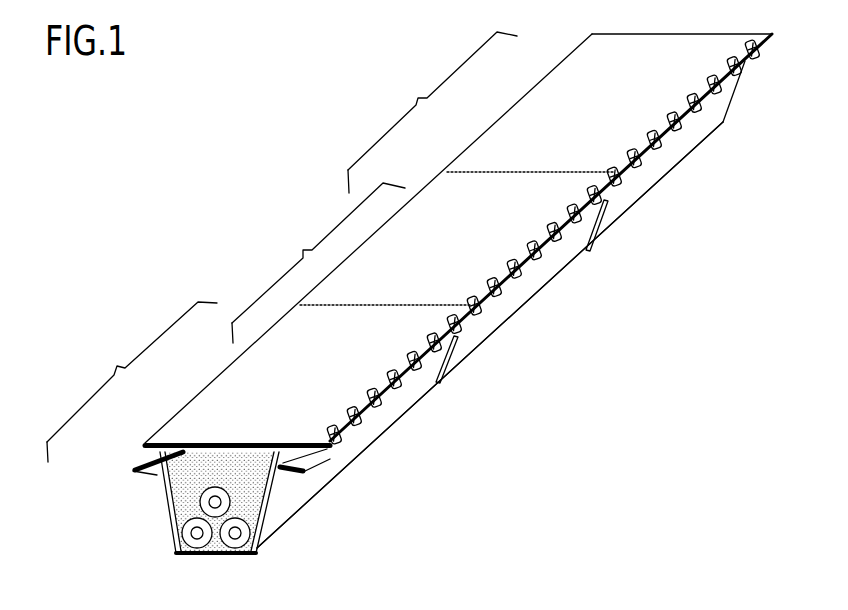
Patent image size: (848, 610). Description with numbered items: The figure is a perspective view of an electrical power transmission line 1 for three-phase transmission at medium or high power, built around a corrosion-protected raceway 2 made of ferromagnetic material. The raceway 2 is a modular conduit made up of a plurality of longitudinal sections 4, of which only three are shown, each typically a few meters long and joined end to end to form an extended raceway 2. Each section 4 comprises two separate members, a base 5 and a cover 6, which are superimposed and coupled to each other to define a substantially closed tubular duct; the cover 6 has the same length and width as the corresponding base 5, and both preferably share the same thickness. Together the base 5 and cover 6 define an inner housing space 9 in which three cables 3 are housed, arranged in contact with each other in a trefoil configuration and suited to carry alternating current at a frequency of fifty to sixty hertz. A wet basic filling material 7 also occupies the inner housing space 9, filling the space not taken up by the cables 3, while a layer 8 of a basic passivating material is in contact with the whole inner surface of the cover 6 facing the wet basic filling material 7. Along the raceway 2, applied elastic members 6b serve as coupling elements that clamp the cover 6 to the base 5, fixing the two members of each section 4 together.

The electrical power transmission line 1 is at (409, 308).
The raceway 2 is at (497, 351).
The cables 3 is at (213, 553).
The longitudinal sections 4 is at (125, 150).
The base 5 is at (348, 455).
The cover 6 is at (320, 379).
The applied elastic members 6b is at (403, 384).
The wet basic filling material 7 is at (277, 503).
The layer of basic passivating material 8 is at (280, 470).
The inner housing space 9 is at (162, 490).